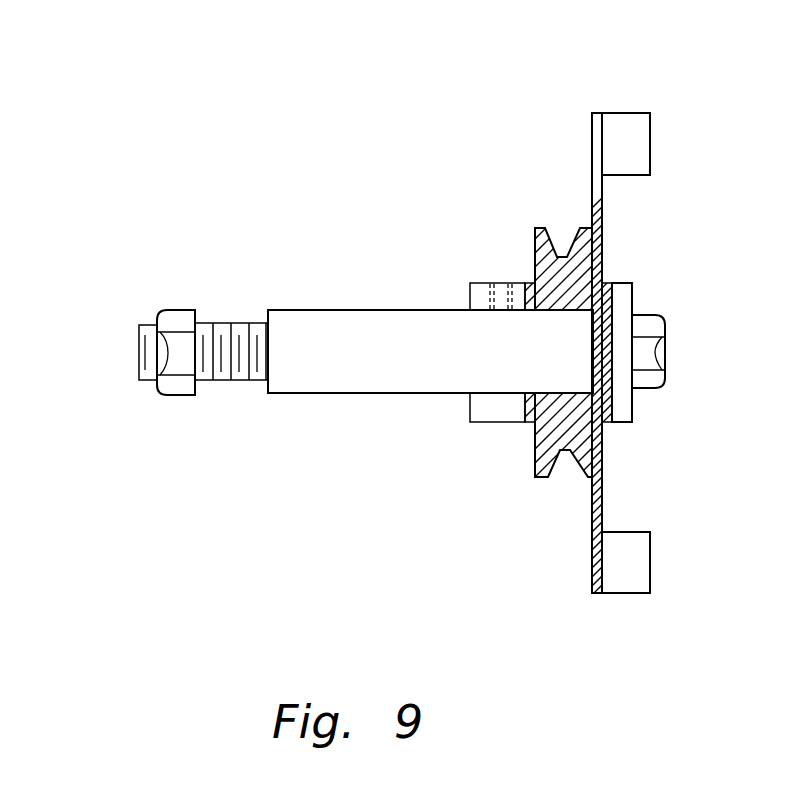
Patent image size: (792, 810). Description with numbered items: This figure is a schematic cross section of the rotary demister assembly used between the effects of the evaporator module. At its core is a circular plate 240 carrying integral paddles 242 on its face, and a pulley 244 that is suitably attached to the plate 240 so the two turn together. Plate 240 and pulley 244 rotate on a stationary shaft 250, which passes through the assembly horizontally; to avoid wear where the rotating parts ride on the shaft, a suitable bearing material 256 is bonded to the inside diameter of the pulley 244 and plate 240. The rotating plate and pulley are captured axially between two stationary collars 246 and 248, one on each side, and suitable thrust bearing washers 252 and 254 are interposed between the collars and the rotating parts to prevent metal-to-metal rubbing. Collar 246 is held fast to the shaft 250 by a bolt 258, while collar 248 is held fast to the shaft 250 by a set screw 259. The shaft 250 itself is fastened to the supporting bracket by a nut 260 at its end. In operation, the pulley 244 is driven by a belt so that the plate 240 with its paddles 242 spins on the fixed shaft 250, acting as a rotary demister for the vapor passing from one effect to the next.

The circular plate 240 is at (593, 128).
The paddles 242 is at (650, 133).
The pulley 244 is at (580, 232).
The collar 246 is at (634, 293).
The collar 248 is at (470, 310).
The shaft 250 is at (348, 393).
The thrust bearing washer 252 is at (605, 425).
The thrust bearing washer 254 is at (528, 283).
The bearing material 256 is at (537, 465).
The bolt 258 is at (667, 350).
The set screw 259 is at (495, 283).
The nut 260 is at (172, 310).